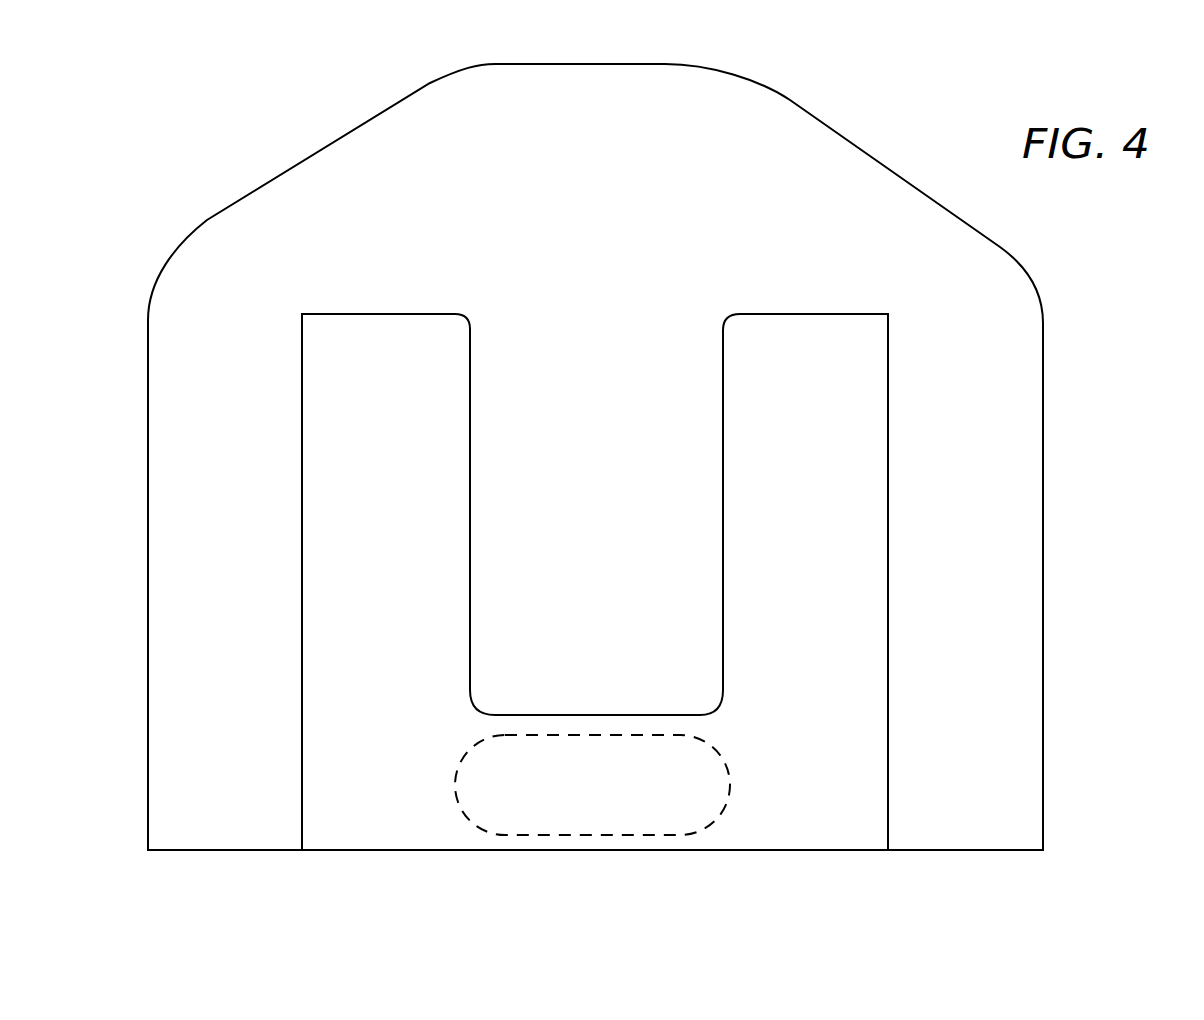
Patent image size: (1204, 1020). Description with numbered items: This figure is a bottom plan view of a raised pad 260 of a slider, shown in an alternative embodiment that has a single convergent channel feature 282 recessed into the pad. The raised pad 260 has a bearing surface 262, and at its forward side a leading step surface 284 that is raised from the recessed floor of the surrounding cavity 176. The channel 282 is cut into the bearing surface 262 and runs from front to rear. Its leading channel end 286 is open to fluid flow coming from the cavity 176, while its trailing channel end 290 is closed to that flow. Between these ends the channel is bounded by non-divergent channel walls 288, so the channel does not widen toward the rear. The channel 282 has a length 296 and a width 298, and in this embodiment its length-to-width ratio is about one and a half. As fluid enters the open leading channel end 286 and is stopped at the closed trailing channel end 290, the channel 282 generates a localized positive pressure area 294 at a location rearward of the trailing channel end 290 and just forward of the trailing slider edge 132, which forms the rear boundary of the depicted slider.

The cavity 176 is at (305, 83).
The raised pad 260 is at (840, 87).
The bearing surface 262 is at (853, 387).
The convergent channel feature 282 is at (630, 518).
The leading step surface 284 is at (298, 203).
The leading channel end 286 is at (577, 318).
The non-divergent channel walls 288 is at (474, 397).
The trailing channel end 290 is at (592, 714).
The localized positive pressure area 294 is at (721, 816).
The channel length 296 is at (442, 713).
The channel width 298 is at (707, 453).
The trailing slider edge 132 is at (380, 850).